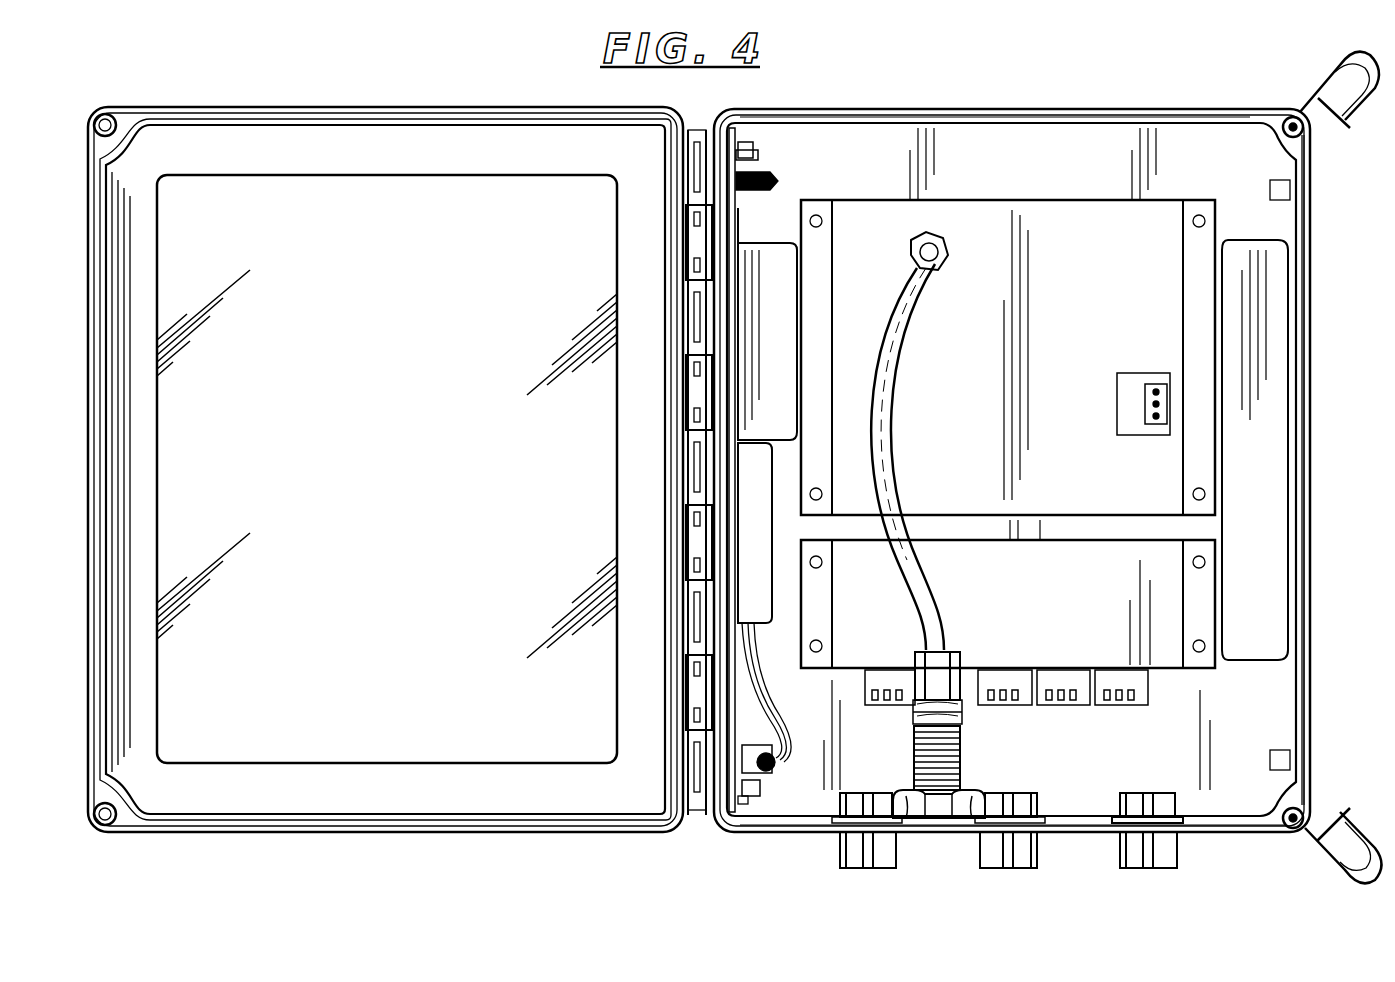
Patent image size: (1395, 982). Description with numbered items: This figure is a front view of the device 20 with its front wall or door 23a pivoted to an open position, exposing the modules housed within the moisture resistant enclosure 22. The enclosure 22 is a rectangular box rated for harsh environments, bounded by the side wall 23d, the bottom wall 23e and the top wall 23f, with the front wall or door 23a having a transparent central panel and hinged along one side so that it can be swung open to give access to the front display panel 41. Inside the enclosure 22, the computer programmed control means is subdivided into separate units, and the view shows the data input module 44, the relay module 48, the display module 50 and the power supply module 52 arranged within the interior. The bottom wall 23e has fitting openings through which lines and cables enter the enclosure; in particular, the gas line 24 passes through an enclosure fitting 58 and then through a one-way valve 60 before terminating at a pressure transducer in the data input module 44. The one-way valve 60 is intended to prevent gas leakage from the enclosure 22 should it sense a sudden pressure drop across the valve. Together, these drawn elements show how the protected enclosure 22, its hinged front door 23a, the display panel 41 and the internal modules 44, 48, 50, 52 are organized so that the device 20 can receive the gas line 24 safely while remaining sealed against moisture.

The device 20 is at (936, 92).
The moisture resistent enclosure 22 is at (845, 110).
The front wall or door 23a is at (235, 142).
The side wall 23d is at (1366, 370).
The bottom wall 23e is at (1082, 842).
The top wall 23f is at (1082, 90).
The gas line 24 is at (908, 512).
The front display panel 41 is at (725, 822).
The data input module 44 is at (990, 364).
The relay module 48 is at (1097, 628).
The display module 50 is at (790, 372).
The power supply module 52 is at (1272, 517).
The enclosure fitting 58 is at (972, 802).
The one-way valve 60 is at (958, 712).